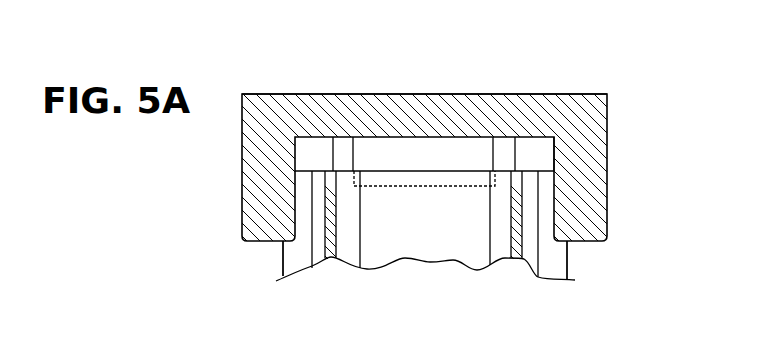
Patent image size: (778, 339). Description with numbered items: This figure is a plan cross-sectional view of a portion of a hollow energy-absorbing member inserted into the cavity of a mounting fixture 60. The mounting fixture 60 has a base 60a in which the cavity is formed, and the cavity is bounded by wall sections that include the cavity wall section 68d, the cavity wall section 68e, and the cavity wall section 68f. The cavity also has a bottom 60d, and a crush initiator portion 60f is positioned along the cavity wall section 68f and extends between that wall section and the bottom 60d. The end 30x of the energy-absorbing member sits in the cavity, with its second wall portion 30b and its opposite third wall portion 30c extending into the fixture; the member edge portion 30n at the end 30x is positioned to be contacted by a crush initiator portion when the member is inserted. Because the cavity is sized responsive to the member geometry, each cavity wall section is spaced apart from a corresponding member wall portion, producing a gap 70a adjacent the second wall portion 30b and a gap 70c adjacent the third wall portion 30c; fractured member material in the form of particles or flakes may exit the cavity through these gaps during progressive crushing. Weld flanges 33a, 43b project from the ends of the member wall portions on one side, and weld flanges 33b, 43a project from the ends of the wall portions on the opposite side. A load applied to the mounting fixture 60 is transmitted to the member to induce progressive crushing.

The mounting fixture 60 is at (352, 94).
The base 60a is at (444, 122).
The crush initiator portion 60f is at (412, 152).
The bottom 60d is at (503, 148).
The cavity wall section 68d is at (317, 148).
The cavity wall section 68f is at (537, 150).
The cavity wall section 68e is at (548, 128).
The gap 70a is at (300, 197).
The gap 70c is at (548, 202).
The end 30x is at (541, 216).
The second wall portion 30b is at (317, 239).
The third wall portion 30c is at (533, 236).
The member edge portion 30n is at (432, 178).
The weld flange 33a is at (296, 266).
The weld flange 43b is at (296, 266).
The weld flange 33b is at (555, 267).
The weld flange 43a is at (555, 267).